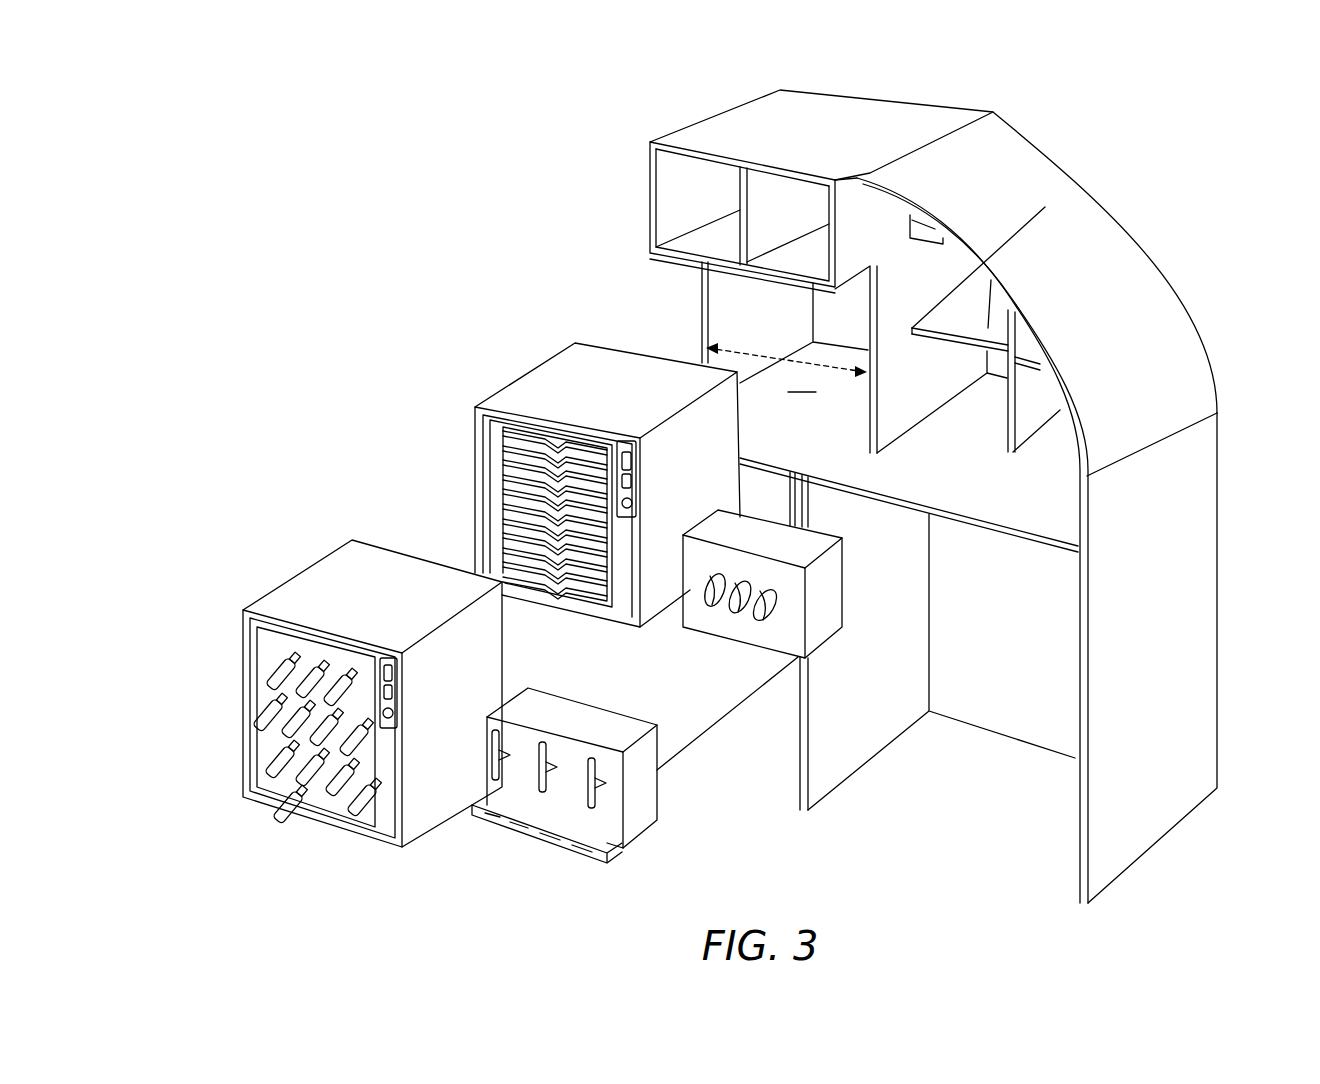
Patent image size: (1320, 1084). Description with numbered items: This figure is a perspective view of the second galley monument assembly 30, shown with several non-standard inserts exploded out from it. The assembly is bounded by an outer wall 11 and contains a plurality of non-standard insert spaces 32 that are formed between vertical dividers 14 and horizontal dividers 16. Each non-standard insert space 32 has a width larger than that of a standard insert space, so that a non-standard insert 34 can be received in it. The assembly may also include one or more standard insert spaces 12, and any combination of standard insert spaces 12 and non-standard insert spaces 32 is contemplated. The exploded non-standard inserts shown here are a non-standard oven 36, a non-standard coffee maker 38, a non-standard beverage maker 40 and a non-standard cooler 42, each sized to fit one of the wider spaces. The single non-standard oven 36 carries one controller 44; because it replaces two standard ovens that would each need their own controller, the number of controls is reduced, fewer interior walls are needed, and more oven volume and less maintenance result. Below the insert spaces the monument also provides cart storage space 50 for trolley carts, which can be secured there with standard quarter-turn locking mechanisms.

The outer wall 11 is at (1150, 282).
The standard insert spaces 12 is at (670, 205).
The vertical dividers 14 is at (930, 278).
The horizontal dividers 16 is at (797, 258).
The second galley monument assembly 30 is at (1232, 163).
The non-standard insert spaces 32 is at (752, 312).
The non-standard insert 34 is at (424, 409).
The non-standard oven 36 is at (498, 402).
The non-standard coffee maker 38 is at (750, 635).
The non-standard beverage maker 40 is at (540, 845).
The non-standard cooler 42 is at (248, 704).
The controller 44 is at (627, 452).
The cart storage space 50 is at (968, 833).